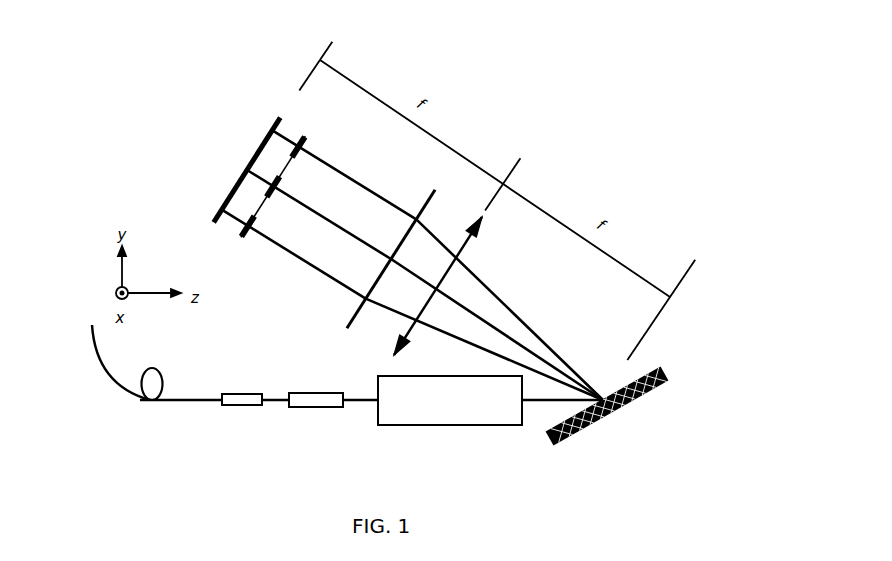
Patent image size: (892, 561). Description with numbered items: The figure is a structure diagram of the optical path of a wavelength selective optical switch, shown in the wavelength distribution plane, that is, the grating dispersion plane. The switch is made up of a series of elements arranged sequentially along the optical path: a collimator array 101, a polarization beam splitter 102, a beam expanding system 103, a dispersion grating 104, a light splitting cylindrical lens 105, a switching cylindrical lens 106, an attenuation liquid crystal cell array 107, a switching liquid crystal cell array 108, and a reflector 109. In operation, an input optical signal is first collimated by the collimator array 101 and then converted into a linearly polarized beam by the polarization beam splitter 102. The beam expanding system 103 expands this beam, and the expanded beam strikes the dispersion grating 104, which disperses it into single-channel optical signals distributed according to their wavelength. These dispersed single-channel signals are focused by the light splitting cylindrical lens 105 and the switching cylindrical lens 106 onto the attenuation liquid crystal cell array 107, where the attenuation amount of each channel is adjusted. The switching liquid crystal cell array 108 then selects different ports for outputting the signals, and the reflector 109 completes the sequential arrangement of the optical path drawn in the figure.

The collimator array 101 is at (242, 410).
The polarization beam splitter 102 is at (316, 413).
The beam expanding system 103 is at (450, 413).
The dispersion grating 104 is at (607, 422).
The light splitting cylindrical lens 105 is at (454, 286).
The switching cylindrical lens 106 is at (391, 252).
The attenuation liquid crystal cell array 107 is at (318, 133).
The switching liquid crystal cell array 108 is at (257, 201).
The reflector 109 is at (251, 156).